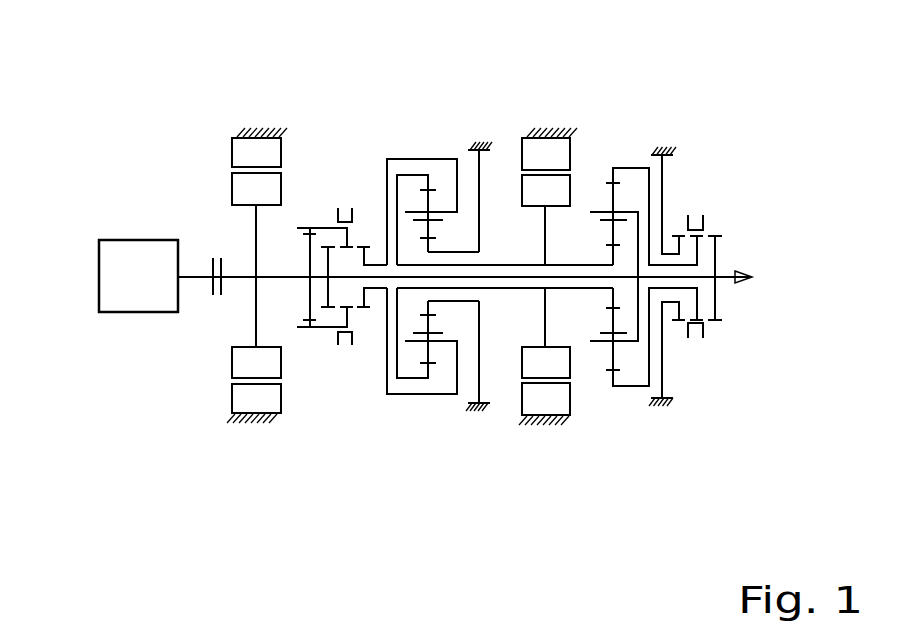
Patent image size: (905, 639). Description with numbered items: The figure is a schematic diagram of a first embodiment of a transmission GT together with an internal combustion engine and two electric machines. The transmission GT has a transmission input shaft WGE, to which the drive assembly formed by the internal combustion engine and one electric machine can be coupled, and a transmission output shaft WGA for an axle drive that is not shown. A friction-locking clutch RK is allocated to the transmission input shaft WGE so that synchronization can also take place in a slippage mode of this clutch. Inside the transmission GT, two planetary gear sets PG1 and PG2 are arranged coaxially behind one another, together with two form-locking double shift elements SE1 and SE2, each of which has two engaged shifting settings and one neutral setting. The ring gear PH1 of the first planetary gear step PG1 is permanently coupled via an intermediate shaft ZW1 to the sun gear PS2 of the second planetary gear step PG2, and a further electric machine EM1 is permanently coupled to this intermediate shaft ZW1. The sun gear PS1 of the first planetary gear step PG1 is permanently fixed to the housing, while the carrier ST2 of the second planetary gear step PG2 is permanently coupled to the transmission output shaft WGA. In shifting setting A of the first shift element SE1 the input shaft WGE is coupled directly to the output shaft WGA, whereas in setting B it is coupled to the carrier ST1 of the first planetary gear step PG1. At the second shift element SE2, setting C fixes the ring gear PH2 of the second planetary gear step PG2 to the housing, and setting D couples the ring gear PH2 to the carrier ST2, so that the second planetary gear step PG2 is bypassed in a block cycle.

The transmission input shaft WGE is at (237, 273).
The first form-locking shift element SE1 is at (337, 172).
The first planetary gear step PG1 is at (391, 280).
The sun gear of the first planetary gear step PS1 is at (463, 250).
The electric machine EM1 is at (543, 115).
The second planetary gear step PG2 is at (631, 280).
The second form-locking shift element SE2 is at (692, 203).
The transmission output shaft WGA is at (725, 276).
The friction-locking clutch RK is at (217, 295).
The transmission GT is at (312, 420).
The ring gear of the first planetary gear step PH1 is at (405, 378).
The carrier of the first planetary gear step ST1 is at (424, 393).
The intermediate shaft ZW1 is at (497, 290).
The sun gear of the second planetary gear step PS2 is at (610, 292).
The ring gear of the second planetary gear step PH2 is at (635, 387).
The carrier of the second planetary gear step ST2 is at (630, 342).
The first shifting setting of the first shift element A is at (337, 248).
The second shifting setting of the first shift element B is at (364, 248).
The first shifting setting of the second shift element C is at (678, 254).
The second shifting setting of the second shift element D is at (715, 254).